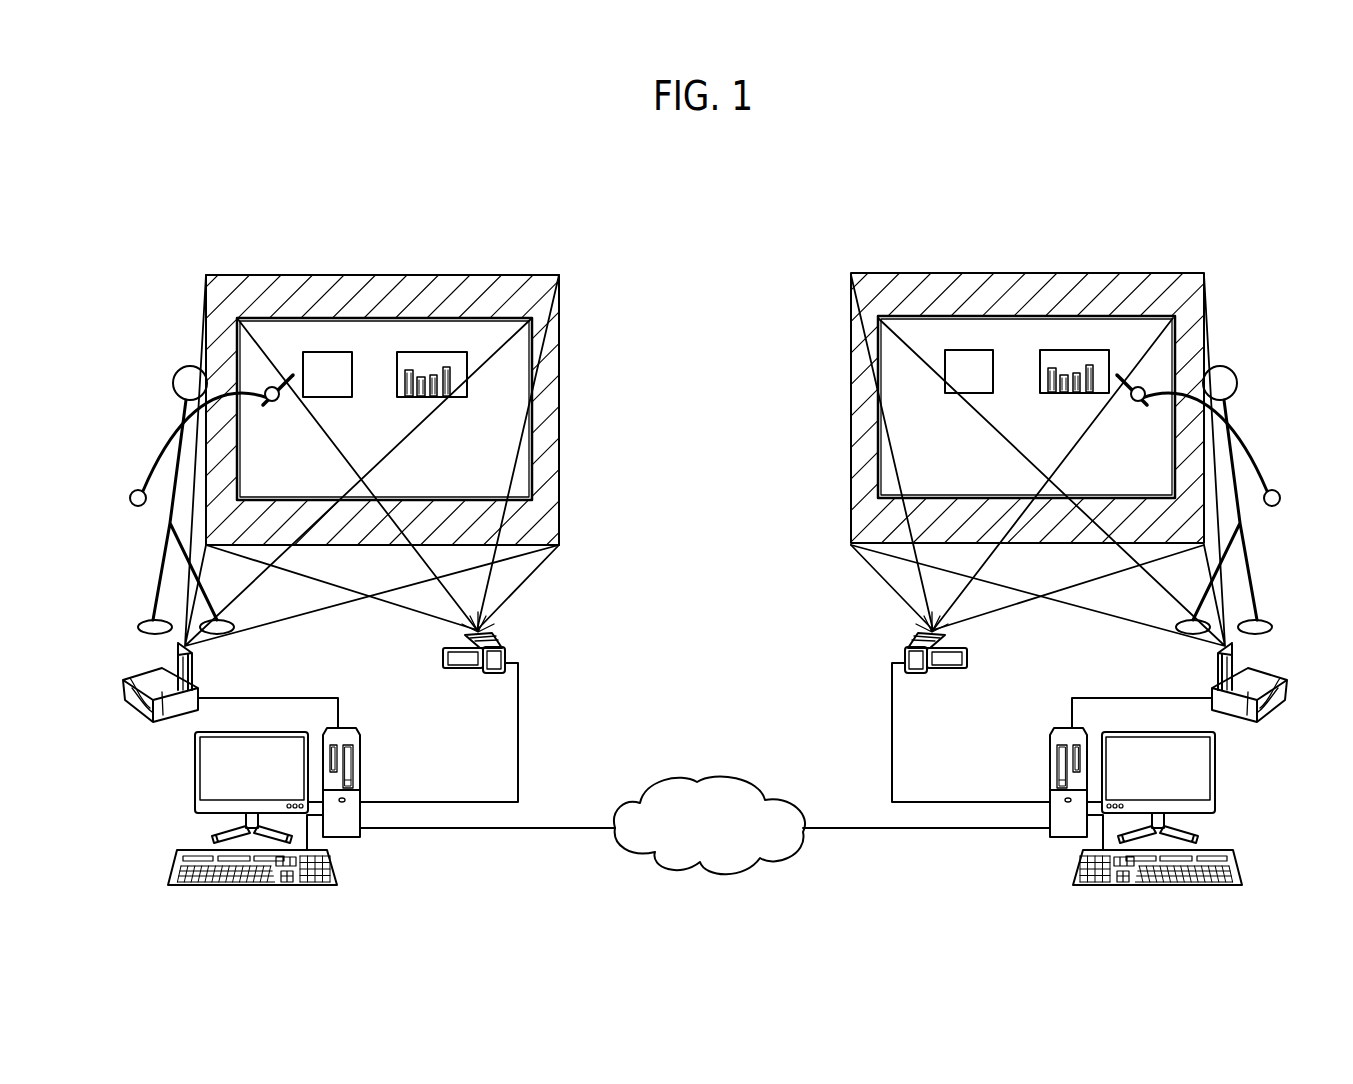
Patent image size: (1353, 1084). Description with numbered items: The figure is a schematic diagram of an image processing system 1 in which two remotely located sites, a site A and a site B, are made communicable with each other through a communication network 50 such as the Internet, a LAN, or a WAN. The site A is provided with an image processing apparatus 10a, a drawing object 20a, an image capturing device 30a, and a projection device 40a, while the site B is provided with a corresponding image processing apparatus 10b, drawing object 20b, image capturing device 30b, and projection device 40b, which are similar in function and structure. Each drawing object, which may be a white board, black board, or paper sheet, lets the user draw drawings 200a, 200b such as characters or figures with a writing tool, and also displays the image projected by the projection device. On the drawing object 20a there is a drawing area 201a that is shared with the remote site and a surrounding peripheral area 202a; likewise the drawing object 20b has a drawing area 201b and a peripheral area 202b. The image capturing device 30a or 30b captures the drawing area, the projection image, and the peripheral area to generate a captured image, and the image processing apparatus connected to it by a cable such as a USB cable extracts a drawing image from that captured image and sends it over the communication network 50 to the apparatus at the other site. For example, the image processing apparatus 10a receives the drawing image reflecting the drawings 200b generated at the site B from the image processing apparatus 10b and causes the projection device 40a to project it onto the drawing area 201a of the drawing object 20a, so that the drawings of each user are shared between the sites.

The image processing system 1 is at (727, 195).
The site A is at (228, 228).
The site B is at (1182, 228).
The image processing apparatus 10a is at (347, 726).
The image processing apparatus 10b is at (1063, 724).
The drawing object 20a is at (383, 315).
The drawing object 20b is at (1014, 313).
The drawing area 201a is at (295, 335).
The drawing area 201b is at (930, 333).
The peripheral area 202a is at (483, 282).
The peripheral area 202b is at (1098, 280).
The drawings 200a is at (337, 397).
The drawings 200b is at (457, 397).
The image capturing device 30a is at (505, 653).
The image capturing device 30b is at (905, 653).
The projection device 40a is at (143, 670).
The projection device 40b is at (1283, 668).
The communication network 50 is at (553, 826).